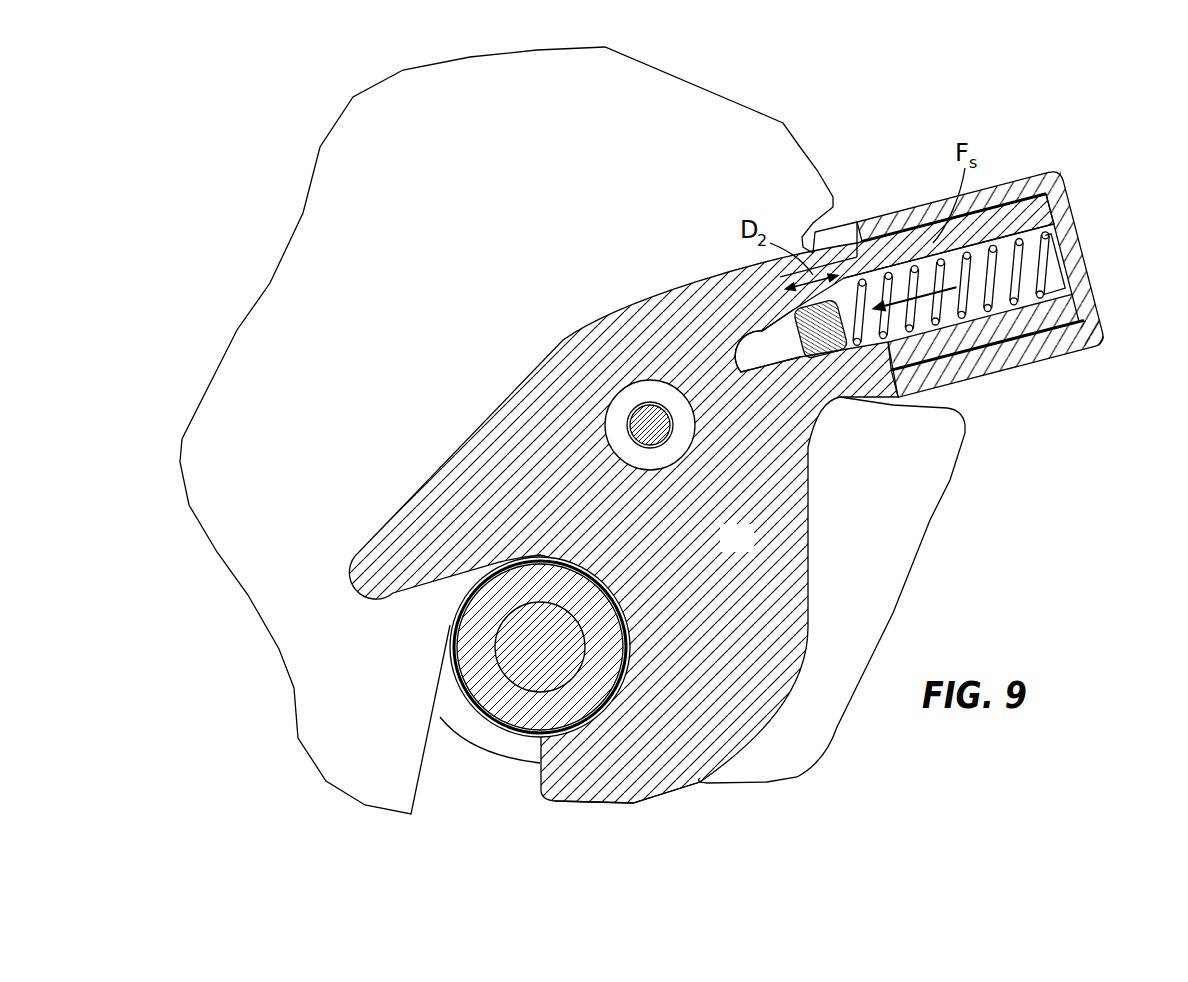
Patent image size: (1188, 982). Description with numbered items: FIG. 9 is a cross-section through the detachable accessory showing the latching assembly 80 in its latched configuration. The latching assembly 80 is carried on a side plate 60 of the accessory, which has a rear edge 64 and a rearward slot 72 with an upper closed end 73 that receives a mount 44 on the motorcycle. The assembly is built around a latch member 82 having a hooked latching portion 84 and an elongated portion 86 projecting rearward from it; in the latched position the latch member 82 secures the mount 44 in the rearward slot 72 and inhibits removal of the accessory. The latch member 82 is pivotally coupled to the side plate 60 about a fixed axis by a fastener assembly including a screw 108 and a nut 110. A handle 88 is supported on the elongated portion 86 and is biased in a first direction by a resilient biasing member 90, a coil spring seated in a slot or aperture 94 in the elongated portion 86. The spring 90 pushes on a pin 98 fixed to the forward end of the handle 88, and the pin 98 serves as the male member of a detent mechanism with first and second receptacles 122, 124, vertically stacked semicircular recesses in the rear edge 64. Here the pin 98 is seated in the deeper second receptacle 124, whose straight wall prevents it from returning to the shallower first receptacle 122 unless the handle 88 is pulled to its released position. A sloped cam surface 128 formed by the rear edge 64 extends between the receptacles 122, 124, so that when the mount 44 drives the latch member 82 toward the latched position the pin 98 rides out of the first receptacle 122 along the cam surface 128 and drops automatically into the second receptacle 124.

The mount 44 is at (497, 713).
The side plate 60 is at (322, 443).
The rear edge 64 is at (930, 525).
The rearward slot 72 is at (425, 772).
The upper closed end 73 is at (483, 610).
The latching assembly 80 is at (620, 184).
The latch member 82 is at (745, 554).
The hooked latching portion 84 is at (563, 773).
The elongated portion 86 is at (1070, 305).
The handle 88 is at (1105, 348).
The resilient biasing member 90 is at (1047, 262).
The slot or aperture 94 is at (750, 330).
The pin 98 is at (887, 297).
The screw 108 is at (648, 418).
The nut 110 is at (620, 416).
The first receptacle 122 is at (812, 232).
The second receptacle 124 is at (850, 347).
The cam surface 128 is at (870, 222).